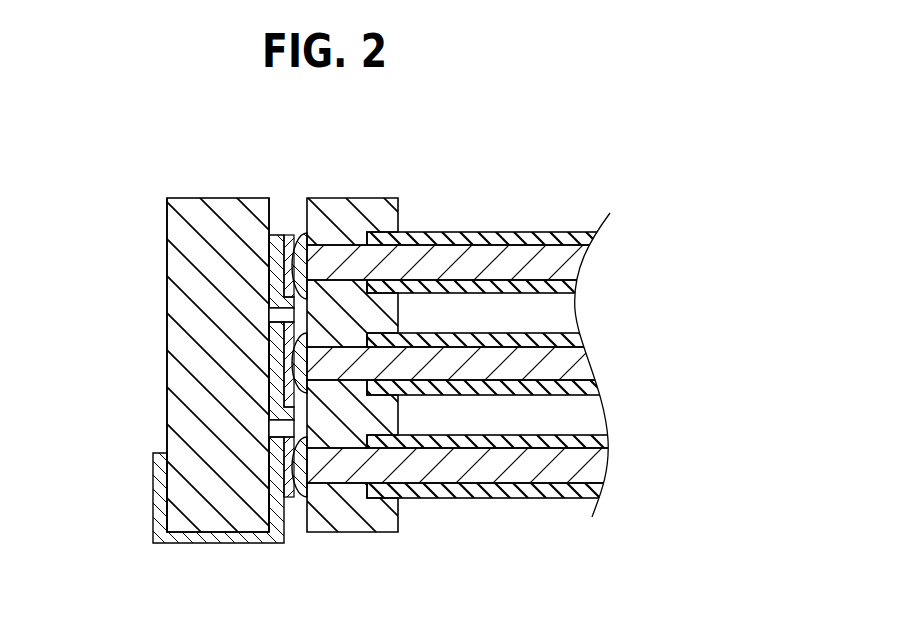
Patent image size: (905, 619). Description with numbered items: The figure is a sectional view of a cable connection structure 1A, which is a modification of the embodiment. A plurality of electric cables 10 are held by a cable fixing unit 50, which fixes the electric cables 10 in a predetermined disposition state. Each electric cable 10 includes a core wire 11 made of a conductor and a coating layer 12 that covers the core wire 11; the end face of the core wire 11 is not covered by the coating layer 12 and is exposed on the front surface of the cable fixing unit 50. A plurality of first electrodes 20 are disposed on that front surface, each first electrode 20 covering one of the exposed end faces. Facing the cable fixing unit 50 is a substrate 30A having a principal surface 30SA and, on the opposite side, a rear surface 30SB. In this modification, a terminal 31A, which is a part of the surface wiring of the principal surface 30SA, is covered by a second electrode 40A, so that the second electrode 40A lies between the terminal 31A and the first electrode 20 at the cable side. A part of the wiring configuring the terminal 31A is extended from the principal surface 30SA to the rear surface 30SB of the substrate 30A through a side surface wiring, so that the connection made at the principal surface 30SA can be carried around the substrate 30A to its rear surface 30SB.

The cable connection structure 1A is at (563, 155).
The electric cable 10 is at (507, 324).
The core wire 11 is at (423, 232).
The coating layer 12 is at (470, 231).
The first electrode 20 is at (300, 232).
The substrate 30A is at (217, 197).
The principal surface 30SA is at (286, 417).
The rear surface 30SB is at (160, 407).
The terminal 31A is at (286, 518).
The second electrode 40A is at (292, 498).
The cable fixing unit 50 is at (358, 197).